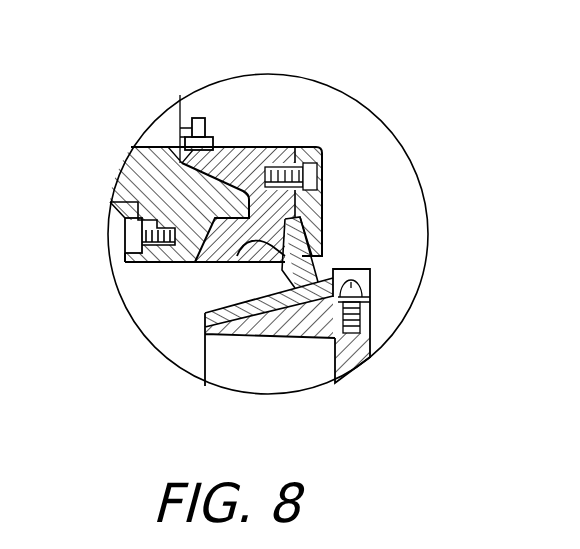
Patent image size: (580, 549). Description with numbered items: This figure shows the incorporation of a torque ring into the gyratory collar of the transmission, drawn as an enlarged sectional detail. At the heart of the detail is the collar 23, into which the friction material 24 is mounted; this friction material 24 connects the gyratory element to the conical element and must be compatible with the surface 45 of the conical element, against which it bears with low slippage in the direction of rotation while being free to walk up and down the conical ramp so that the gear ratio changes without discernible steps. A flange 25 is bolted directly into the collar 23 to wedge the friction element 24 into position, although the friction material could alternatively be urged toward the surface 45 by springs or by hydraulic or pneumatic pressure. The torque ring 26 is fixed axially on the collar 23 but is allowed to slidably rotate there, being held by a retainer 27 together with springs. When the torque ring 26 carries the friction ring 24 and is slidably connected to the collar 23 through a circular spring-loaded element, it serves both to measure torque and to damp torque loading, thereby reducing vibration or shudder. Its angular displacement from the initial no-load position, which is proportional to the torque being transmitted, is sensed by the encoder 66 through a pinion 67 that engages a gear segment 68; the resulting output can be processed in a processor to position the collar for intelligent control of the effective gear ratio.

The collar 23 is at (214, 182).
The friction material 24 is at (237, 268).
The flange 25 is at (310, 215).
The torque ring 26 is at (263, 150).
The retainer 27 is at (110, 209).
The surface of the conical element 45 is at (325, 277).
The encoder 66 is at (162, 135).
The pinion 67 is at (203, 118).
The gear segment 68 is at (217, 137).